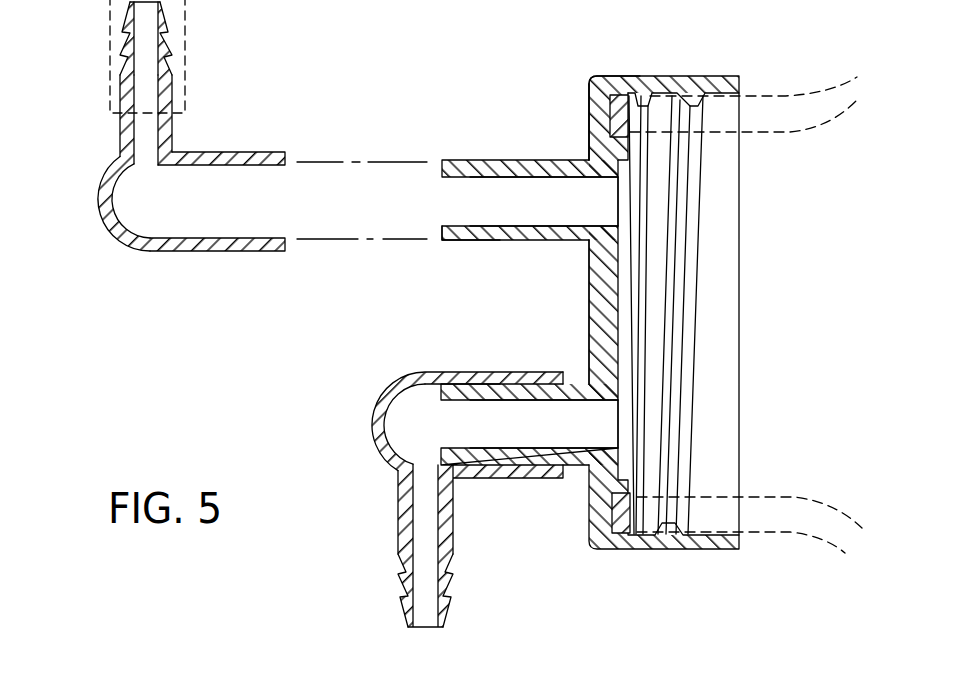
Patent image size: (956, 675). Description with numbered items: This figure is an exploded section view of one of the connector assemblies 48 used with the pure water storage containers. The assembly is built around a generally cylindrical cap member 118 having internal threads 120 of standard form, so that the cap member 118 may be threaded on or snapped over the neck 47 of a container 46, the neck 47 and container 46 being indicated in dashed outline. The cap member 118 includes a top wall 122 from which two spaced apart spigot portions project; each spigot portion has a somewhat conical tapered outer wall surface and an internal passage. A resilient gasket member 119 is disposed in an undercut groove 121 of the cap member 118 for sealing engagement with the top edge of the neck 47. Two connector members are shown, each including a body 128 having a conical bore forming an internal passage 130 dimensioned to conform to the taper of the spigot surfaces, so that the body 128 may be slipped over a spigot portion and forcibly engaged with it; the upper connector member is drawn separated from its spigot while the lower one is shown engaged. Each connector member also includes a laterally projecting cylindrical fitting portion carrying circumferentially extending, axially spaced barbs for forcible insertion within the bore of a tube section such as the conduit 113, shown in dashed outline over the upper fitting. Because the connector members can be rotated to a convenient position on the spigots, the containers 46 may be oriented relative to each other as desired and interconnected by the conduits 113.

The container 46 is at (773, 95).
The neck 47 is at (700, 548).
The connector assembly 48 is at (578, 120).
The tube section 113 is at (107, 40).
The cap member 118 is at (531, 330).
The resilient gasket member 119 is at (589, 86).
The internal threads 120 is at (692, 108).
The undercut groove 121 is at (633, 100).
The top wall 122 is at (589, 262).
The body 128 is at (164, 157).
The internal passage 130 is at (241, 238).